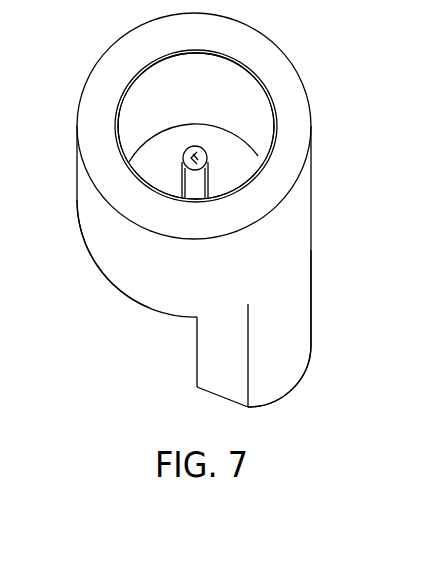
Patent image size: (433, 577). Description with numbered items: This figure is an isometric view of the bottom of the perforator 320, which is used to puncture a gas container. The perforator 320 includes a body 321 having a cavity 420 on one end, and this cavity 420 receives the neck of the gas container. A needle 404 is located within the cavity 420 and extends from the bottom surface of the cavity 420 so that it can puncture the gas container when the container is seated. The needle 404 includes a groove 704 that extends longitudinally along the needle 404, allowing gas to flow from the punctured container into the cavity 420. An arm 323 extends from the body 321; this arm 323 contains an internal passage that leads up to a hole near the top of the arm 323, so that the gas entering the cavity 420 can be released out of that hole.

The perforator 320 is at (275, 70).
The body 321 is at (122, 265).
The arm 323 is at (290, 336).
The needle 404 is at (185, 157).
The cavity 420 is at (171, 84).
The groove 704 is at (205, 164).